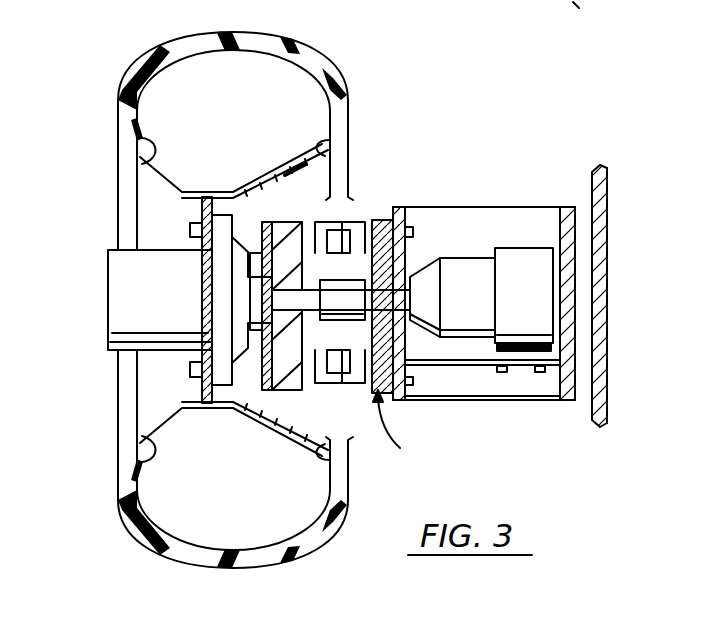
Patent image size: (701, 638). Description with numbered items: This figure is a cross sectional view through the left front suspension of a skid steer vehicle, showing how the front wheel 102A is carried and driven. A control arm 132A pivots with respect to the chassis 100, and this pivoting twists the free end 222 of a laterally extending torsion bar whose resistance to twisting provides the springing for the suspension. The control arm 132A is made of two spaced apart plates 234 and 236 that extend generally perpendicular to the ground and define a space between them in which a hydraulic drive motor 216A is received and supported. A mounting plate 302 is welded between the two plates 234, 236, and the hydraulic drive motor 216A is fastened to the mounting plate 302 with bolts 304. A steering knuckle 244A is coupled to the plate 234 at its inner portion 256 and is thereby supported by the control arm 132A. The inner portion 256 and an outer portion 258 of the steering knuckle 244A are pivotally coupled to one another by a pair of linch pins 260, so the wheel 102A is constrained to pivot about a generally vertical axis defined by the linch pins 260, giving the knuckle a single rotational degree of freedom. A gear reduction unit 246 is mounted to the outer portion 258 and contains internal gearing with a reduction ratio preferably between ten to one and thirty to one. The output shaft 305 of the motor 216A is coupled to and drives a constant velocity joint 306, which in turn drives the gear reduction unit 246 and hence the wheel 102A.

The chassis 100 is at (610, 216).
The wheel 102A is at (172, 47).
The control arm 132A is at (395, 215).
The hydraulic drive motor 216A is at (518, 273).
The free end of torsion bar 222 is at (595, 13).
The plate 234 is at (405, 260).
The plate 236 is at (575, 257).
The steering knuckle 244A is at (404, 434).
The gear reduction unit 246 is at (168, 302).
The inner portion 256 is at (355, 226).
The outer portion 258 is at (298, 210).
The linch pins 260 is at (300, 167).
The mounting plate 302 is at (470, 370).
The bolts 304 is at (505, 372).
The output shaft 305 is at (412, 245).
The constant velocity joint 306 is at (343, 307).